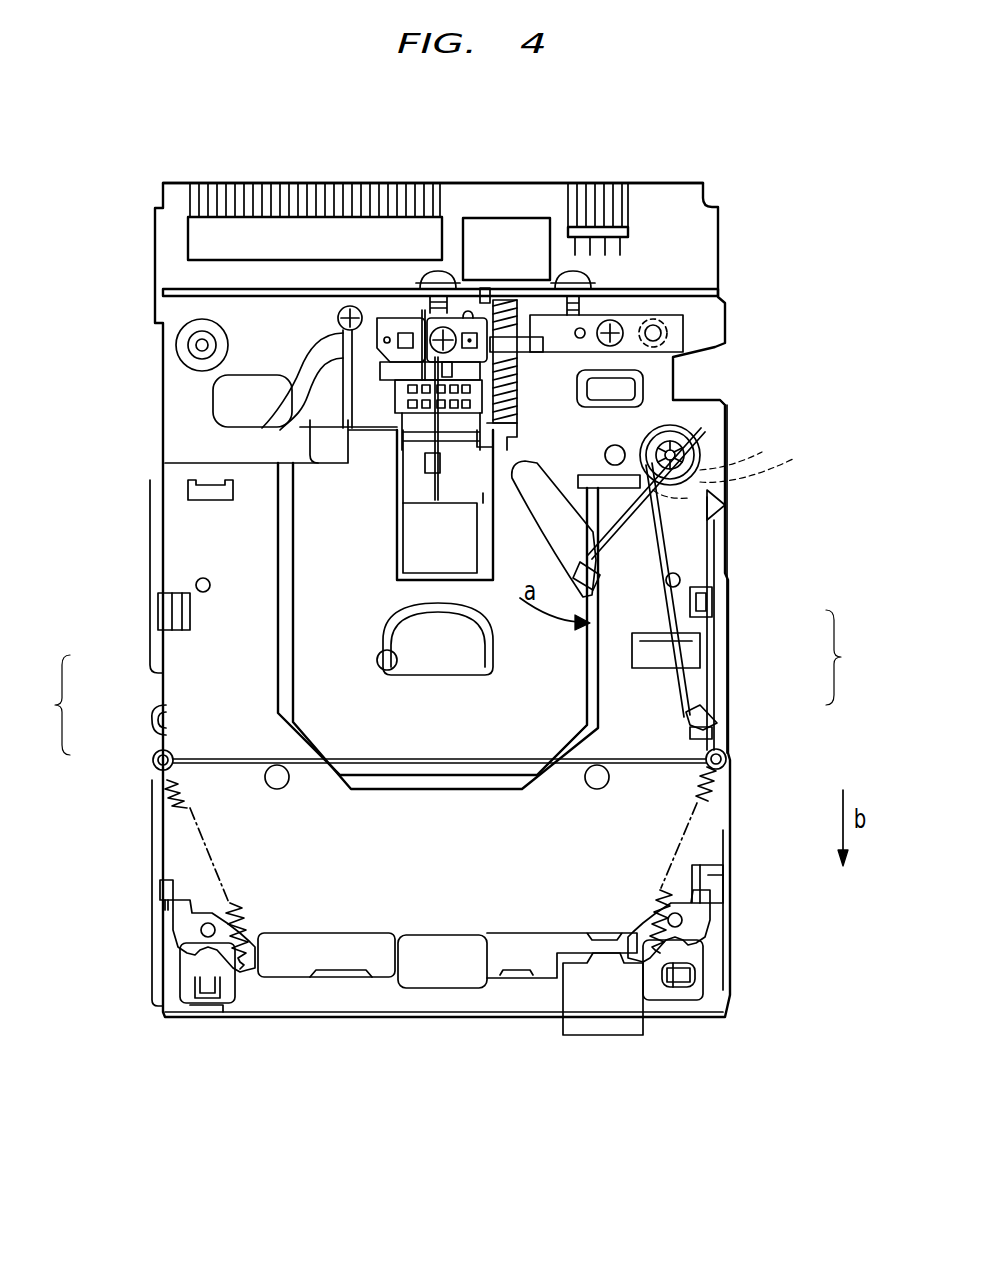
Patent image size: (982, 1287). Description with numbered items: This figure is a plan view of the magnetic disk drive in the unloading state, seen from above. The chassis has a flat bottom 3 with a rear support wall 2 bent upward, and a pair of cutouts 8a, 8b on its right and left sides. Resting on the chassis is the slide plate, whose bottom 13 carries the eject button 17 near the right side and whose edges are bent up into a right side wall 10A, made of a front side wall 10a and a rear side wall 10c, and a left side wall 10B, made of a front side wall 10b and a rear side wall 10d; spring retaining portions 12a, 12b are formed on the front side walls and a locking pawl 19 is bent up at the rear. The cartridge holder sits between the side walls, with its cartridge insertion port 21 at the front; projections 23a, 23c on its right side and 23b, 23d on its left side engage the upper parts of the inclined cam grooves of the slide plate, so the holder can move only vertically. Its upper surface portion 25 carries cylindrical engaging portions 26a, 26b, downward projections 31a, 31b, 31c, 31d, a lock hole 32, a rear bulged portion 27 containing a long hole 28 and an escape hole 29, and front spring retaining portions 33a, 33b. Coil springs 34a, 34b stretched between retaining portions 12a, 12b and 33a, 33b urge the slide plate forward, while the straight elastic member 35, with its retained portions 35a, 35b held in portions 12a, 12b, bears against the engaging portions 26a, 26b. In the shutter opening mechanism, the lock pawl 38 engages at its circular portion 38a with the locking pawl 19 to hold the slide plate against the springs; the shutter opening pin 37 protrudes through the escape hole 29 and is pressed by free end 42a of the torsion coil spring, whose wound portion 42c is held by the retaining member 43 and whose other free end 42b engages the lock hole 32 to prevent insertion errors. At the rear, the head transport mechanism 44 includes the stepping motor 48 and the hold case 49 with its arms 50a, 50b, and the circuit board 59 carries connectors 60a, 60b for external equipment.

The support wall 2 is at (172, 287).
The bottom 3 is at (154, 400).
The cutout 8a is at (700, 725).
The cutout 8b is at (168, 713).
The right side wall 10A is at (857, 657).
The left side wall 10B is at (44, 705).
The front side wall 10a is at (717, 833).
The front side wall 10b is at (148, 800).
The rear side wall 10c is at (730, 570).
The rear side wall 10d is at (160, 585).
The spring retaining portion 12a is at (705, 762).
The spring retaining portion 12b is at (172, 757).
The bottom 13 is at (307, 960).
The eject button 17 is at (617, 1036).
The locking pawl 19 is at (735, 450).
The cartridge insertion port 21 is at (375, 947).
The projection 23a is at (728, 882).
The projection 23b is at (160, 890).
The projection 23c is at (632, 640).
The projection 23d is at (170, 612).
The upper surface portion 25 is at (177, 536).
The engaging portion 26a is at (597, 789).
The engaging portion 26b is at (290, 787).
The bulged portion 27 is at (300, 655).
The long hole 28 is at (385, 668).
The escape hole 29 is at (710, 535).
The projection 31a is at (682, 922).
The projection 31b is at (201, 930).
The projection 31c is at (680, 580).
The projection 31d is at (207, 583).
The lock hole 32 is at (695, 733).
The spring retaining portion 33a is at (680, 950).
The spring retaining portion 33b is at (250, 963).
The coil spring 34a is at (700, 905).
The coil spring 34b is at (237, 933).
The elastic member 35 is at (448, 772).
The retained portion 35a is at (692, 790).
The retained portion 35b is at (182, 782).
The shutter opening pin 37 is at (600, 590).
The lock pawl 38 is at (700, 520).
The circular portion 38a is at (745, 467).
The free end 42a is at (722, 497).
The free end 42b is at (600, 688).
The wound portion 42c is at (700, 400).
The retaining member 43 is at (695, 440).
The head transport mechanism 44 is at (398, 313).
The stepping motor 48 is at (490, 230).
The hold case 49 is at (387, 557).
The arm 50a is at (507, 435).
The arm 50b is at (322, 440).
The circuit board 59 is at (672, 185).
The connector 60a is at (628, 232).
The connector 60b is at (187, 240).